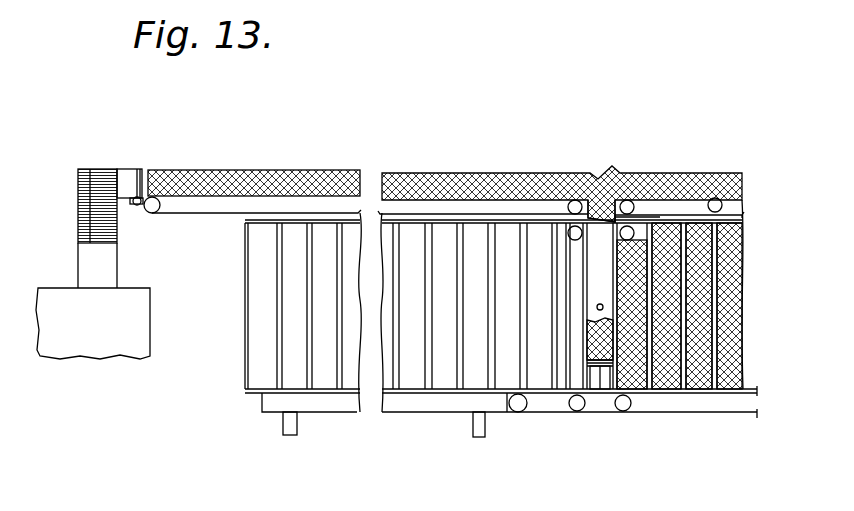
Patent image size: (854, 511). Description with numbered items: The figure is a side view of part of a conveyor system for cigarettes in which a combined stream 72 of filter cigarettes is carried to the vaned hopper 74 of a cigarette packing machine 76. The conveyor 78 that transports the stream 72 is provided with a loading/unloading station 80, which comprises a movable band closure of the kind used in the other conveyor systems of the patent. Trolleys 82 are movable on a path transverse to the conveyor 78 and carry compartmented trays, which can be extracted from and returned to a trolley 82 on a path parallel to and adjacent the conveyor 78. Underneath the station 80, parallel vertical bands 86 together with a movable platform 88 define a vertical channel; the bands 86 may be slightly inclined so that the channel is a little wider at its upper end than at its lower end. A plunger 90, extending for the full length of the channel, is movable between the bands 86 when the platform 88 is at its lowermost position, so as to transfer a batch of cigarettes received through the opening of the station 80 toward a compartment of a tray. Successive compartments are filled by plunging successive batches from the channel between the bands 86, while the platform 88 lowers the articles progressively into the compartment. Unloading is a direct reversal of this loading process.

The combined stream 72 is at (505, 172).
The vaned hopper 74 is at (78, 248).
The cigarette packing machine 76 is at (102, 341).
The conveyor 78 is at (727, 200).
The loading/unloading station 80 is at (657, 213).
The trolley 82 is at (270, 402).
The vertical bands 86 is at (567, 382).
The movable platform 88 is at (600, 372).
The plunger 90 is at (602, 237).